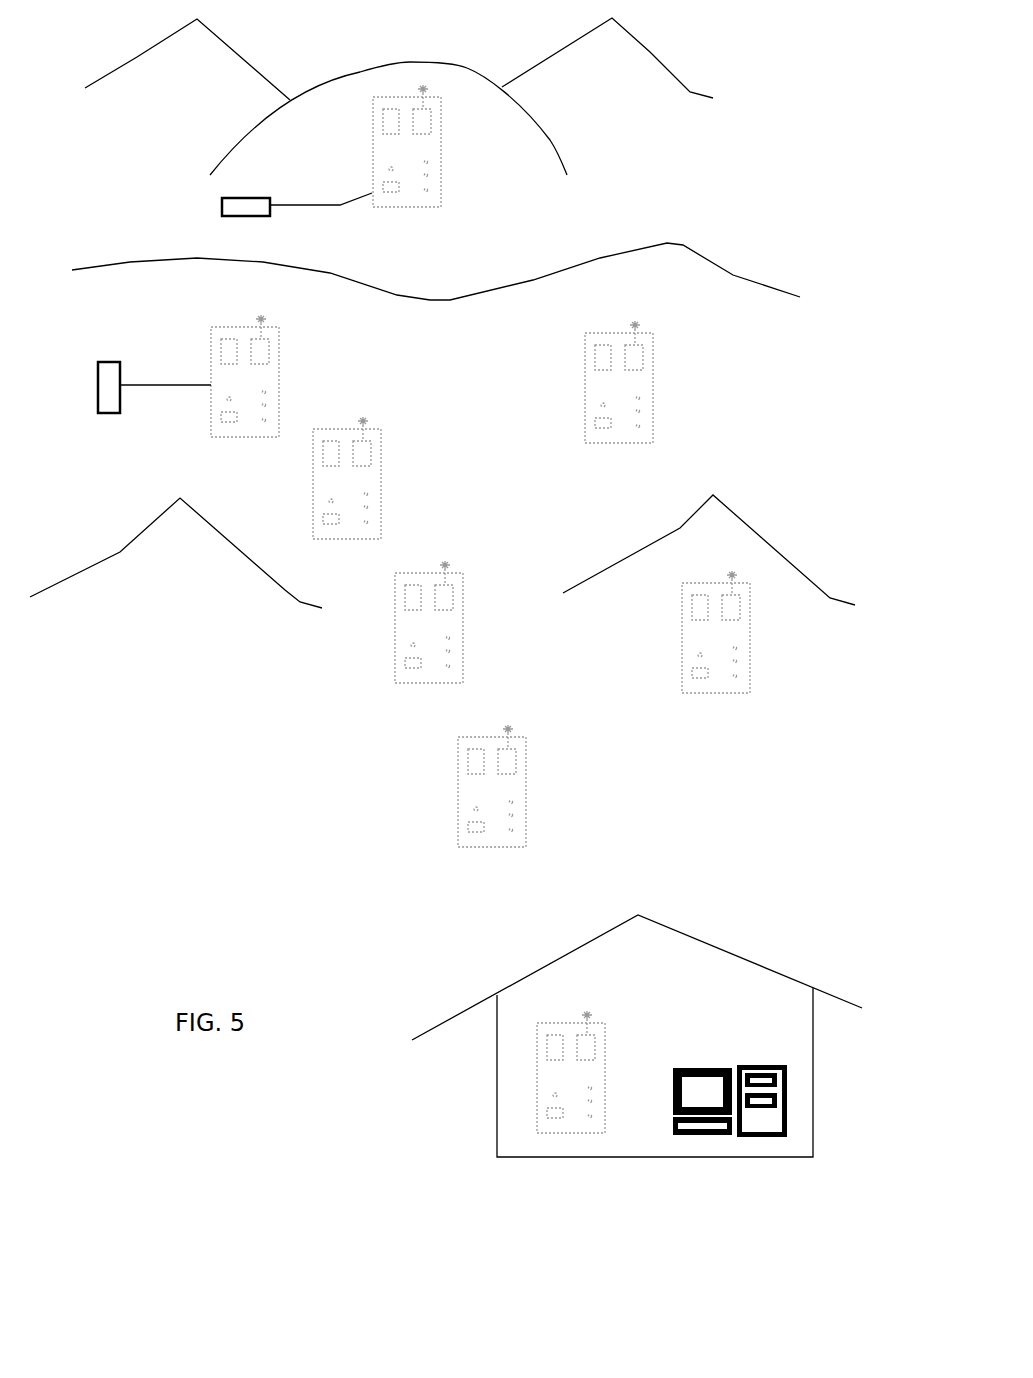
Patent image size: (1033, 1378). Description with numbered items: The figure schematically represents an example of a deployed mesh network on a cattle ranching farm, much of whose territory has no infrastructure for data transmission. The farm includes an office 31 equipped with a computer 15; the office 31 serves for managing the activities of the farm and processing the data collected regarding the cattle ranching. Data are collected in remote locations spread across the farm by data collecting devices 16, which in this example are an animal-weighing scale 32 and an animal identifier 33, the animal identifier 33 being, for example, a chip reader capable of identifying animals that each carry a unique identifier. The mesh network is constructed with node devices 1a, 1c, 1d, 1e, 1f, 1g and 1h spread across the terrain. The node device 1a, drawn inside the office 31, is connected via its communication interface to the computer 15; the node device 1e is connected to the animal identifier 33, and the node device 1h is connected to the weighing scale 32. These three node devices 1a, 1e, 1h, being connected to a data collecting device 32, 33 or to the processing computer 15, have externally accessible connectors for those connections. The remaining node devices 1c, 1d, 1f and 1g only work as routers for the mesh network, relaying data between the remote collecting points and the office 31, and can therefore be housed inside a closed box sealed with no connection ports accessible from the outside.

The node device 1a is at (545, 1085).
The node device 1c is at (462, 580).
The node device 1d is at (378, 435).
The node device 1e is at (280, 335).
The node device 1f is at (730, 628).
The node device 1g is at (640, 380).
The node device 1h is at (432, 147).
The computer 15 is at (767, 1118).
The data collecting device 16 is at (211, 303).
The office 31 is at (708, 967).
The animal-weighing scale 32 is at (220, 208).
The animal identifier 33 is at (100, 362).